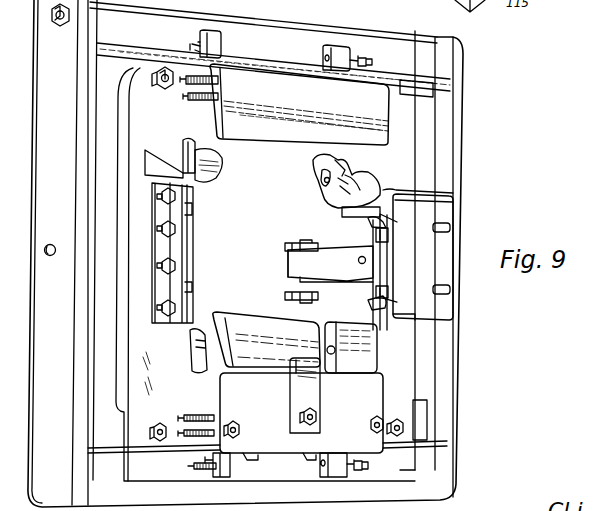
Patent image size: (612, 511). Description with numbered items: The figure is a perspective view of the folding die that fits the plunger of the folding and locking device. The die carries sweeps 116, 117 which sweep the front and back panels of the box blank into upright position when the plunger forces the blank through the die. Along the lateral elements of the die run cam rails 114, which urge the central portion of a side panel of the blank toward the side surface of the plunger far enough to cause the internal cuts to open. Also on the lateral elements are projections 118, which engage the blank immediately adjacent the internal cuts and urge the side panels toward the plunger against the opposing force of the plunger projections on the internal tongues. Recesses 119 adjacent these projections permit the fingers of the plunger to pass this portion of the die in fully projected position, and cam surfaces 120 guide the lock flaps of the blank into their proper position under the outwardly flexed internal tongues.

The cam rail 114 is at (203, 254).
The sweep 116 is at (270, 318).
The sweep 117 is at (306, 136).
The projection 118 is at (377, 235).
The recess 119 is at (370, 222).
The cam surface 120 is at (340, 208).